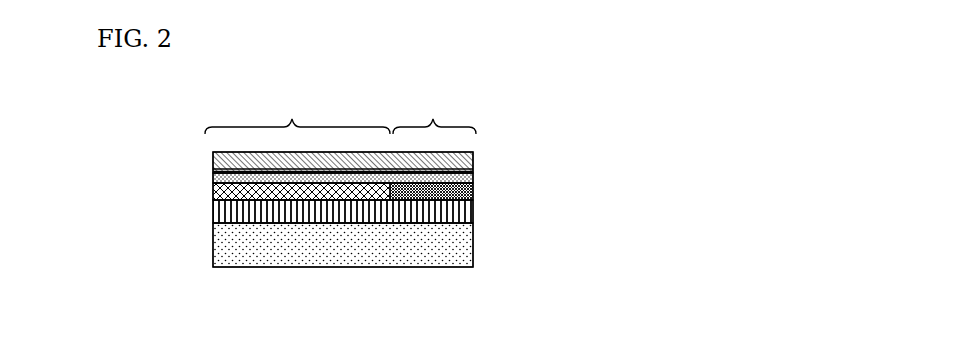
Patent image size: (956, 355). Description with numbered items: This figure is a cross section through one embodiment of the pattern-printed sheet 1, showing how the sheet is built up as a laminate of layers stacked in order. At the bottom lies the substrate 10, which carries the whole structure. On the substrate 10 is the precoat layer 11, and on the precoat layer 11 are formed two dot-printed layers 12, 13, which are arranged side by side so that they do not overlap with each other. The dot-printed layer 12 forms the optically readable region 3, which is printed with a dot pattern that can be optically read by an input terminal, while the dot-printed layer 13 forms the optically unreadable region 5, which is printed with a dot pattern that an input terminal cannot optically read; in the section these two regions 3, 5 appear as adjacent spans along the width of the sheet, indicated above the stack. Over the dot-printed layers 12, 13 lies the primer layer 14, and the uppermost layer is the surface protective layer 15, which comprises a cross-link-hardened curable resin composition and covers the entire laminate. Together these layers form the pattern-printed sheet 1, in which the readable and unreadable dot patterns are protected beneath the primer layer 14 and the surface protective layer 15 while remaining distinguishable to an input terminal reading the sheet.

The pattern-printed sheet 1 is at (493, 138).
The optically readable region 3 is at (297, 114).
The optically unreadable region 5 is at (434, 114).
The substrate 10 is at (440, 248).
The precoat layer 11 is at (443, 213).
The dot-printed layer 12 is at (213, 188).
The dot-printed layer 13 is at (473, 192).
The primer layer 14 is at (455, 180).
The surface protective layer 15 is at (443, 167).